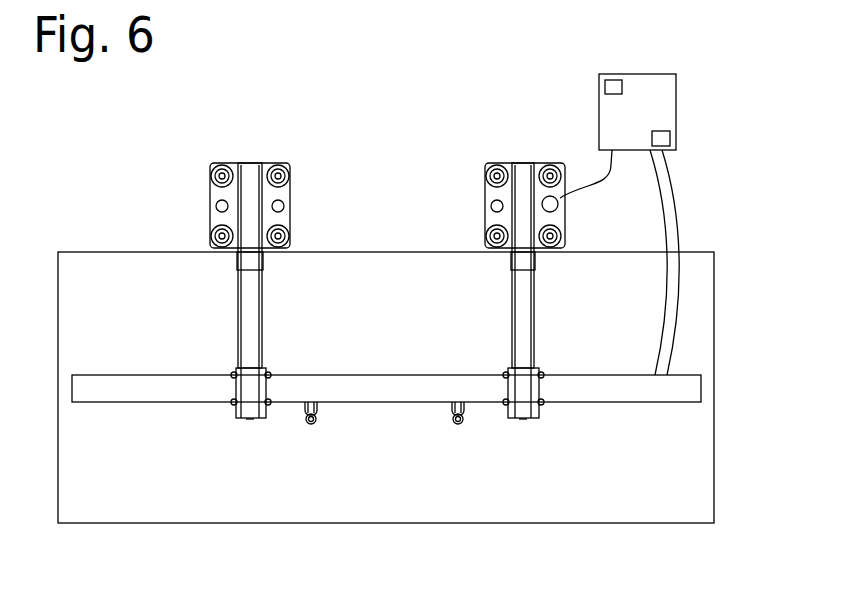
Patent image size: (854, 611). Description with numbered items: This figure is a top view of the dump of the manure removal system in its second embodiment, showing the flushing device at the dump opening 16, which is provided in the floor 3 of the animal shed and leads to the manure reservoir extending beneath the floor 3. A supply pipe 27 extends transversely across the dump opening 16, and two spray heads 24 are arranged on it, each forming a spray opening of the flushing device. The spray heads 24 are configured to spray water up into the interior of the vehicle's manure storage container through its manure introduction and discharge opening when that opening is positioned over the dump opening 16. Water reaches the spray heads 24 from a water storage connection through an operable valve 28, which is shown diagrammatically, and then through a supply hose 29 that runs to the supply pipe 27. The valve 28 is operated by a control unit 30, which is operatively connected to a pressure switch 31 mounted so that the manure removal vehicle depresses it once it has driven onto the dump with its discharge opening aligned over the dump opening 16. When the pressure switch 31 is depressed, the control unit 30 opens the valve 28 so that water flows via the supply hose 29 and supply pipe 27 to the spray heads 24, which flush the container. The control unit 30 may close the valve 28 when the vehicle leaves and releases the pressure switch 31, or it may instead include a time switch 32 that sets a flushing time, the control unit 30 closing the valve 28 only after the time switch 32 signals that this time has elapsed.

The floor 3 is at (176, 592).
The dump opening 16 is at (668, 478).
The spray heads 24 is at (452, 418).
The supply pipe 27 is at (657, 387).
The valve 28 is at (666, 138).
The supply hose 29 is at (665, 309).
The control unit 30 is at (686, 119).
The pressure switch 31 is at (560, 211).
The time switch 32 is at (611, 81).